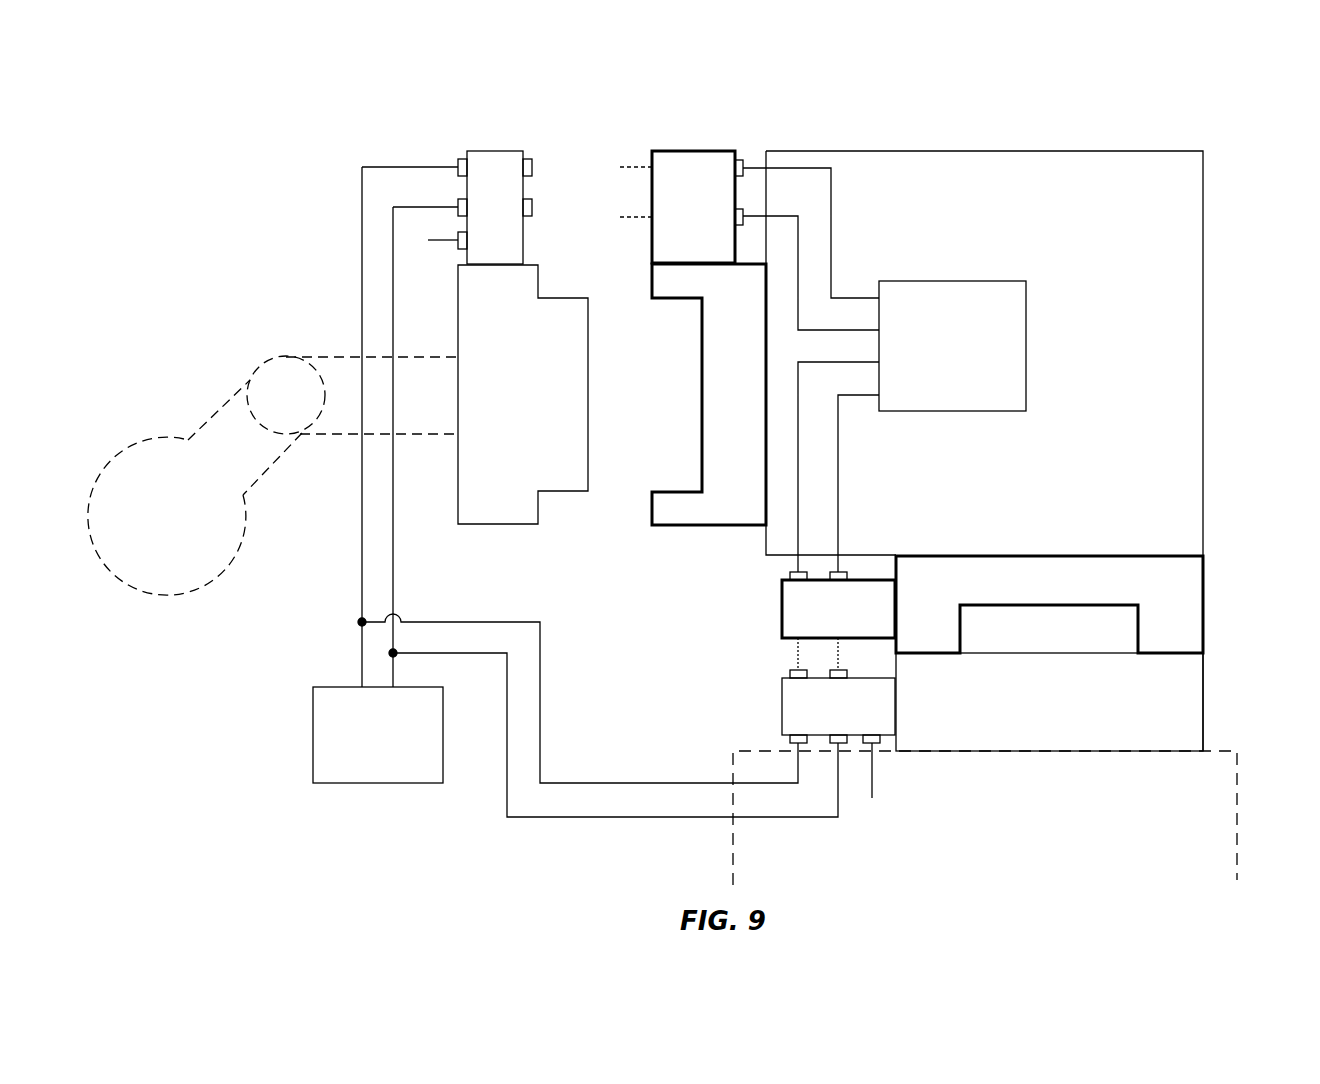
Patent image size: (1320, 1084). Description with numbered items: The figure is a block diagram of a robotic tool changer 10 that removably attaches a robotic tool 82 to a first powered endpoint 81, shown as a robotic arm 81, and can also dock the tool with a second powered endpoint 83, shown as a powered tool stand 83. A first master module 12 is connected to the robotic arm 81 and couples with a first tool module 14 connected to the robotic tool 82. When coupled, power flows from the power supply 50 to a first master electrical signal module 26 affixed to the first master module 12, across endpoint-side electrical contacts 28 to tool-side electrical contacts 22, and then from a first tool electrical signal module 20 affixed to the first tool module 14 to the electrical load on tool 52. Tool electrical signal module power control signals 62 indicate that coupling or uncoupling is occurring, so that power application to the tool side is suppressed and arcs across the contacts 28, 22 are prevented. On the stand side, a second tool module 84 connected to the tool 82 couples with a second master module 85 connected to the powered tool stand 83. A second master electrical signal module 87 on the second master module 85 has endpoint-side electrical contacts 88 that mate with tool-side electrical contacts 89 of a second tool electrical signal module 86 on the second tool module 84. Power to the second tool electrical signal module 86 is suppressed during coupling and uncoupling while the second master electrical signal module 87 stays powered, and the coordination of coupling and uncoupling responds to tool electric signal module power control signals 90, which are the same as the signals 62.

The robotic tool changer 10 is at (290, 112).
The first master module 12 is at (498, 506).
The first tool module 14 is at (698, 510).
The first tool electrical signal module 20 is at (695, 155).
The tool-side electrical contacts 22 is at (638, 215).
The first master electrical signal module 26 is at (493, 160).
The endpoint-side electrical contacts 28 is at (535, 163).
The power supply 50 is at (366, 770).
The electrical load on tool 52 is at (940, 386).
The tool electrical signal module power control signals 62 is at (440, 242).
The first powered endpoint 81 is at (332, 355).
The robotic tool 82 is at (1167, 209).
The second powered endpoint 83 is at (1262, 782).
The second tool module 84 is at (1192, 605).
The second master module 85 is at (1192, 692).
The second tool electrical signal module 86 is at (787, 605).
The second master electrical signal module 87 is at (787, 703).
The endpoint-side electrical contacts 88 is at (790, 672).
The tool-side electrical contacts 89 is at (795, 650).
The tool electric signal module power control signals 90 is at (874, 782).